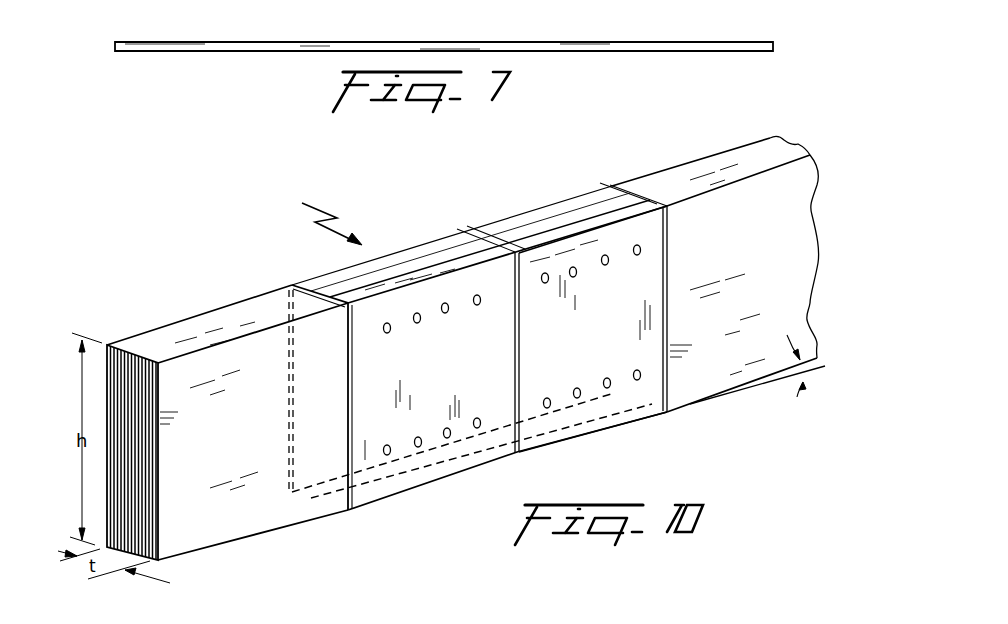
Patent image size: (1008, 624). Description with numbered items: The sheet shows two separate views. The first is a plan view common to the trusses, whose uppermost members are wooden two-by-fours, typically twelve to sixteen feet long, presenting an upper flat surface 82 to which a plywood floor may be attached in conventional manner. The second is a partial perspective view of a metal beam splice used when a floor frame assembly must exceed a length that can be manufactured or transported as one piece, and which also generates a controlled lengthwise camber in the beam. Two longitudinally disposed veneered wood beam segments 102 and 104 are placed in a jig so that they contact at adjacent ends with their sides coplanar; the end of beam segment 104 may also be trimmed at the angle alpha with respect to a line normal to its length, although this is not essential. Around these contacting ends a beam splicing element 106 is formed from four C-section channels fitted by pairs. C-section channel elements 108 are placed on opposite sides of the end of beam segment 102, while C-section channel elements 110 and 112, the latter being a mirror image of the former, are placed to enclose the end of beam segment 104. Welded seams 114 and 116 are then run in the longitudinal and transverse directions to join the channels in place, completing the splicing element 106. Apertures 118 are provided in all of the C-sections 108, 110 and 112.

In FIG. 7, the upper flat surface 82 is at (548, 40).
In FIG. 10, the elongate beam segment 102 is at (163, 340).
In FIG. 10, the elongate beam segment 104 is at (757, 152).
In FIG. 10, the beam splicing element 106 is at (316, 217).
In FIG. 10, the C-section channel element 108 is at (403, 255).
In FIG. 10, the C-section channel element 110 is at (585, 200).
In FIG. 10, the C-section channel element 112 is at (643, 204).
In FIG. 10, the welded seam 114 is at (513, 233).
In FIG. 10, the welded seam 116 is at (521, 370).
In FIG. 10, the apertures 118 is at (420, 447).